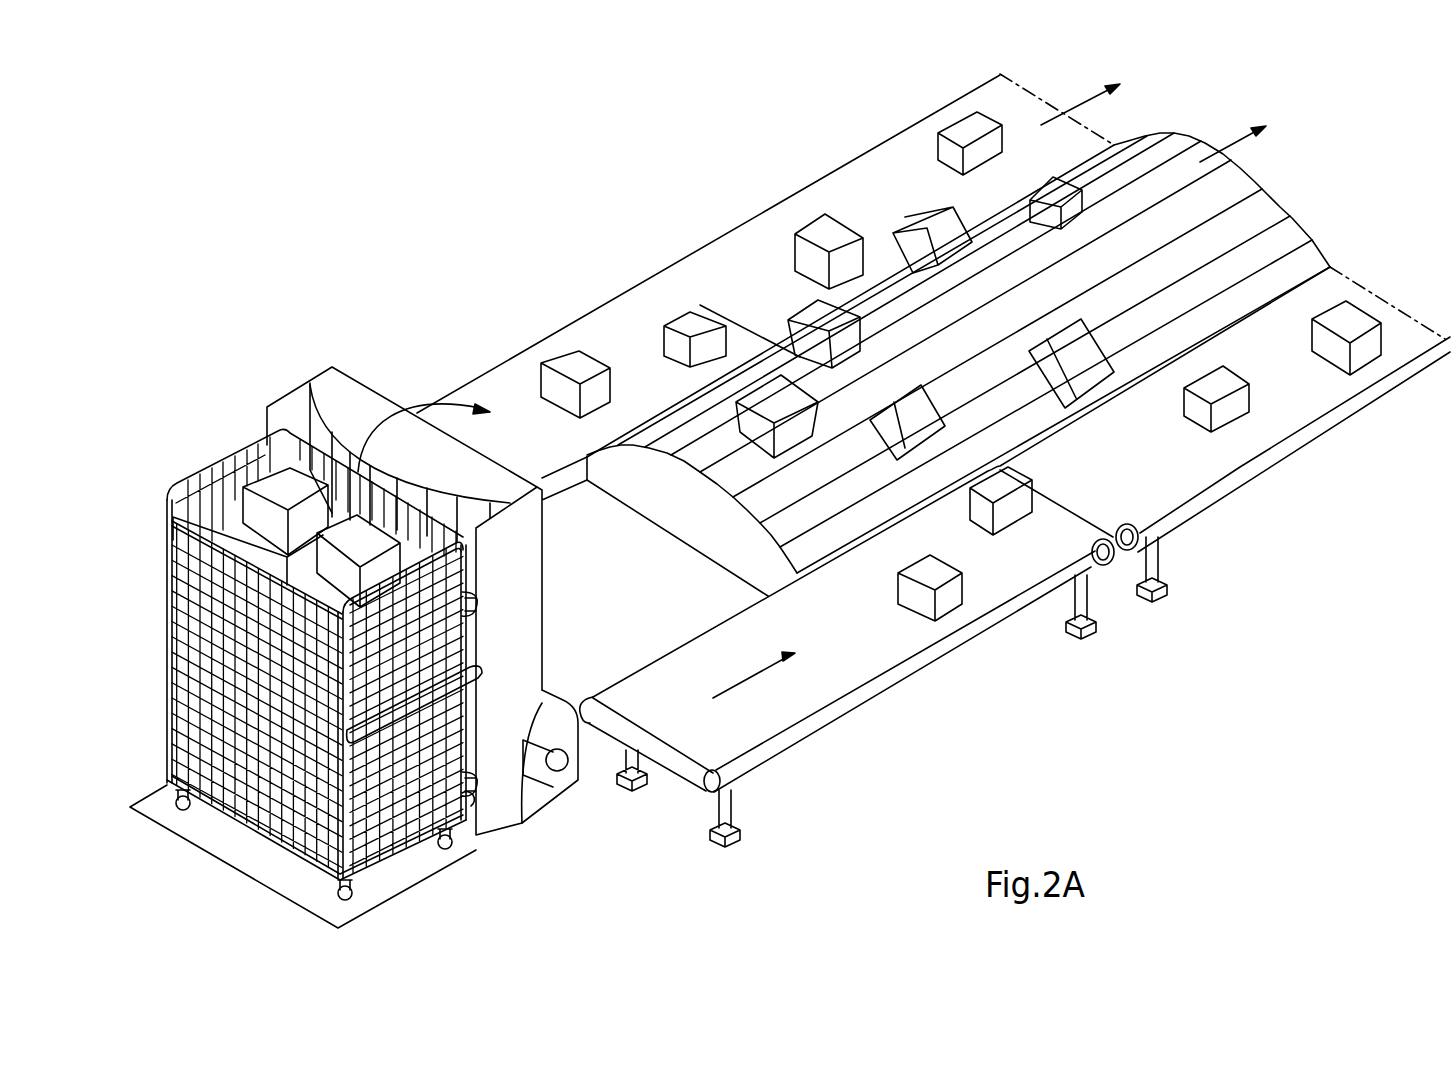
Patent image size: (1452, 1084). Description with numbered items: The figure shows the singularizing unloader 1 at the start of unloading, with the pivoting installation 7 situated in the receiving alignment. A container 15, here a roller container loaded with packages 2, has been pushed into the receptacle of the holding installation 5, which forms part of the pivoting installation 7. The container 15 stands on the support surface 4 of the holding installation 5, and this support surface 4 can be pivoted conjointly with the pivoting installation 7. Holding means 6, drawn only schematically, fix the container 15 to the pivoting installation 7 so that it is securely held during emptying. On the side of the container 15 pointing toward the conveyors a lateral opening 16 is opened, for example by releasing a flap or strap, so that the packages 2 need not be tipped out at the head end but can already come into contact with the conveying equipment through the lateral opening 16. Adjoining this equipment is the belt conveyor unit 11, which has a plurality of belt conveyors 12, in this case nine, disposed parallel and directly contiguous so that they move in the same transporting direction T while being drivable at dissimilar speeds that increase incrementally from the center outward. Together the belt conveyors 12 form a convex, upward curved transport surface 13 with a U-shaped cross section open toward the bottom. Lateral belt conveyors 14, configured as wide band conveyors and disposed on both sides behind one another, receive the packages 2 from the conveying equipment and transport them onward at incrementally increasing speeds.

The singularizing unloader 1 is at (481, 225).
The packages 2 is at (220, 527).
The support surface 4 is at (238, 857).
The holding installation 5 is at (500, 582).
The holding means 6 is at (478, 624).
The pivoting installation 7 is at (365, 398).
The belt conveyor unit 11 is at (1262, 219).
The belt conveyors 12 is at (760, 507).
The transport surface 13 is at (1154, 143).
The lateral belt conveyors 14 is at (748, 243).
The container 15 is at (152, 631).
The lateral opening 16 is at (319, 458).